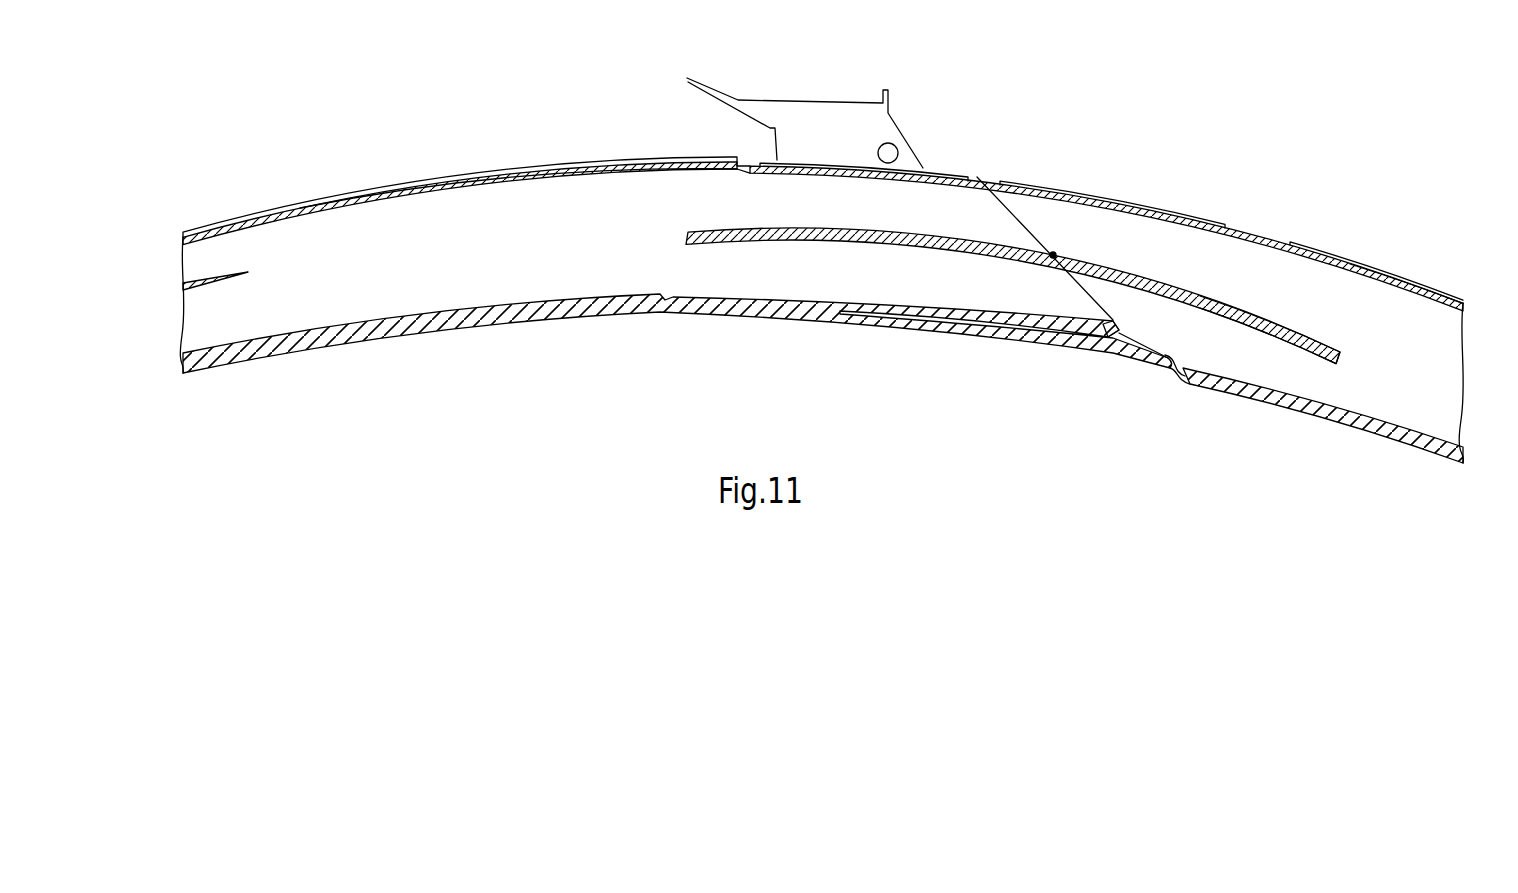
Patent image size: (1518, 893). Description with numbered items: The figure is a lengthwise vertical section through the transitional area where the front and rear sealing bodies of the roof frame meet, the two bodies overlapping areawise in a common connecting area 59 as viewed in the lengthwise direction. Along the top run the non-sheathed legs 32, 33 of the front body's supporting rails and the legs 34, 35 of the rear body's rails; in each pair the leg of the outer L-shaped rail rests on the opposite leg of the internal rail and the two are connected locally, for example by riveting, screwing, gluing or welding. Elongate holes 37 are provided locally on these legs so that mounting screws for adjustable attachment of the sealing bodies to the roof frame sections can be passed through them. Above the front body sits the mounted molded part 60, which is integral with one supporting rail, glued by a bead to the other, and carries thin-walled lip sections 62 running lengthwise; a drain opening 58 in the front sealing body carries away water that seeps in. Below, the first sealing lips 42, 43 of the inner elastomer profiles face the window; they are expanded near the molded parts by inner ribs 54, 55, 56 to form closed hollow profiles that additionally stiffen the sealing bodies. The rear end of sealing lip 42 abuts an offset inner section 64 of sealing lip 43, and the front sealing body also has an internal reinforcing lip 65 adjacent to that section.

The leg 32 is at (455, 180).
The leg 33 is at (493, 188).
The leg 34 is at (1412, 277).
The leg 35 is at (1433, 293).
The elongate holes 37 is at (263, 215).
The first sealing lip 42 is at (970, 325).
The first sealing lip 43 is at (1433, 446).
The inner rib 54 is at (205, 287).
The inner rib 55 is at (810, 240).
The inner rib 56 is at (1263, 320).
The drain opening 58 is at (897, 150).
The connecting area 59 is at (1173, 378).
The molded part 60 is at (856, 90).
The lip sections 62 is at (803, 117).
The offset inner section 64 is at (1145, 340).
The reinforcing lip 65 is at (1112, 350).